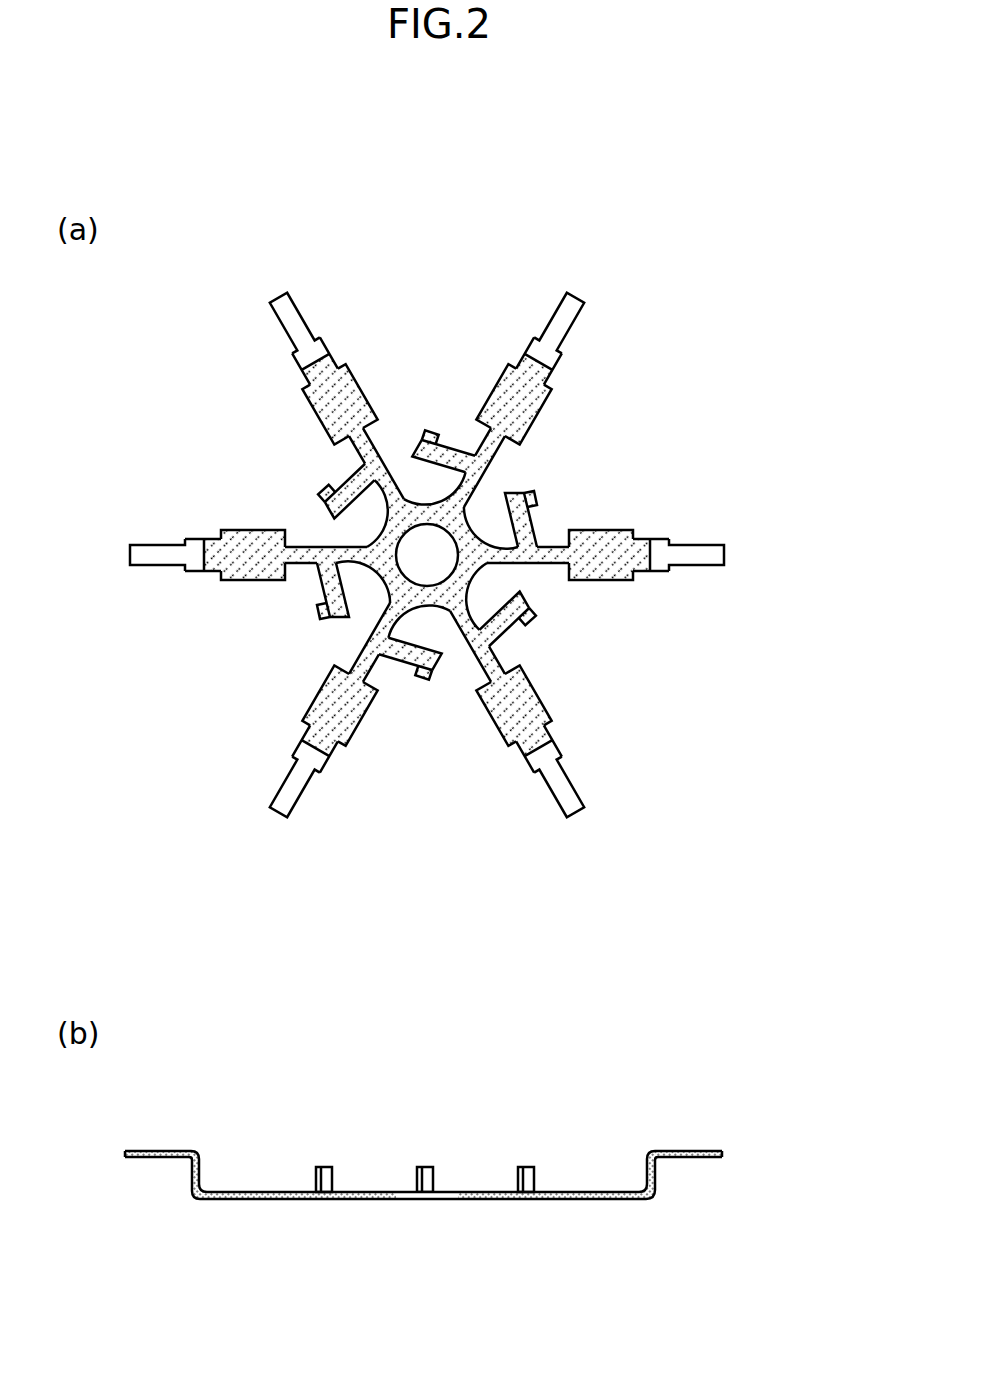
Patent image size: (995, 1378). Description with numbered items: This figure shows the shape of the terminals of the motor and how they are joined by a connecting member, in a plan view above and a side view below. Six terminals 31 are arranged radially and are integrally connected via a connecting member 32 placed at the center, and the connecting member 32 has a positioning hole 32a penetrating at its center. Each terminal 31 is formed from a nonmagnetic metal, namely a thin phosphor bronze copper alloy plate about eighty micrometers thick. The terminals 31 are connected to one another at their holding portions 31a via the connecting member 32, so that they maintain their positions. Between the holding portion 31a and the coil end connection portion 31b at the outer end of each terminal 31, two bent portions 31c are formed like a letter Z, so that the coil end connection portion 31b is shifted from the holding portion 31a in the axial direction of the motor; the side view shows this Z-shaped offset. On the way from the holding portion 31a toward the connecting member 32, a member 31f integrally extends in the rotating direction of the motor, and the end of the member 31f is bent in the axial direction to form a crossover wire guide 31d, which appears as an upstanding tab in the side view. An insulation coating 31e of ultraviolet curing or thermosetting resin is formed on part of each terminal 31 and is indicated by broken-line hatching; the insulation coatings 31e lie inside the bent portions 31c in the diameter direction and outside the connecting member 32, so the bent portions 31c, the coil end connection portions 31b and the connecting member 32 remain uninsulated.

The terminal 31 is at (343, 348).
The holding portion 31a is at (617, 530).
The coil end connection portion 31b is at (705, 550).
The bent portion 31c is at (205, 1145).
The crossover wire guide 31d is at (528, 490).
The insulation coating 31e is at (260, 543).
The member 31f is at (532, 520).
The connecting member 32 is at (442, 603).
The positioning hole 32a is at (423, 537).